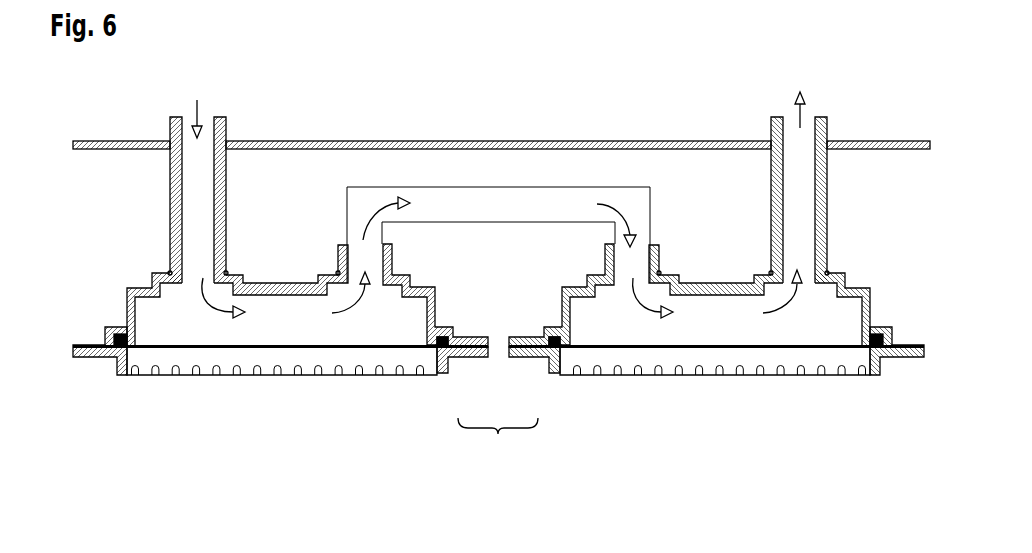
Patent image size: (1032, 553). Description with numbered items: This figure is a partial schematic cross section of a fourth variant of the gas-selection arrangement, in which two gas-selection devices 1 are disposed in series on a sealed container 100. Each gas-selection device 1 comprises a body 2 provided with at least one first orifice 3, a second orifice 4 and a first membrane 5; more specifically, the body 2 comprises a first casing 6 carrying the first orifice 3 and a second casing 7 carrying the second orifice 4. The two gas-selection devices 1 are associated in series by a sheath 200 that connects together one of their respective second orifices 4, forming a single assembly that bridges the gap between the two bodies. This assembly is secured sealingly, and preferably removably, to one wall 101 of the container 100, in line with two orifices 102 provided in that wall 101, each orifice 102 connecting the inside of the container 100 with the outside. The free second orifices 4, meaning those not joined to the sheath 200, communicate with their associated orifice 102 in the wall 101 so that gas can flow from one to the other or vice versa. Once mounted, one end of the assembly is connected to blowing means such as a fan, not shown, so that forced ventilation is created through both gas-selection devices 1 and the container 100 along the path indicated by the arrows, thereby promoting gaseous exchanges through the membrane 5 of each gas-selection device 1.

The gas-selection device 1 is at (151, 412).
The body 2 is at (498, 441).
The first orifice 3 is at (205, 358).
The second orifice 4 is at (352, 280).
The first membrane 5 is at (262, 348).
The first casing 6 is at (457, 362).
The second casing 7 is at (490, 349).
The container 100 is at (107, 149).
The wall 101 is at (878, 145).
The orifice 102 is at (227, 142).
The sheath 200 is at (458, 203).